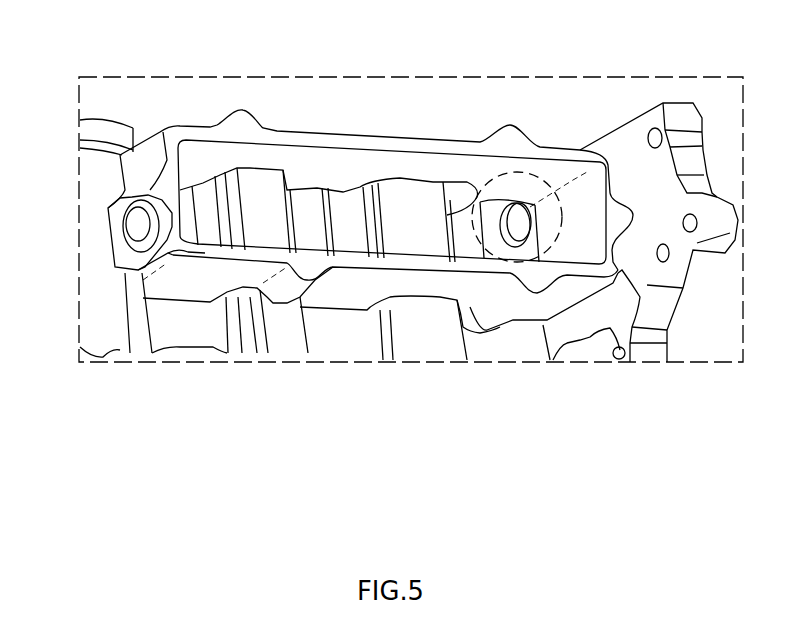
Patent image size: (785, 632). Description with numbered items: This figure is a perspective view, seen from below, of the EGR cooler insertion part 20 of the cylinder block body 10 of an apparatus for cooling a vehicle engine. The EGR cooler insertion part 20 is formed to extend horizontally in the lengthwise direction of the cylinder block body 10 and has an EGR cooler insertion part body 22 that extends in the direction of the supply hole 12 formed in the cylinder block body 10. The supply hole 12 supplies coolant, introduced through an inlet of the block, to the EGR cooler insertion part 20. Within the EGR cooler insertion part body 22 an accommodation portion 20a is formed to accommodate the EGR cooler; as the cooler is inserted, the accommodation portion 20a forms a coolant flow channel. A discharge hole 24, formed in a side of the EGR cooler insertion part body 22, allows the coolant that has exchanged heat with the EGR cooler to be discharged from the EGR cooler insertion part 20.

The cylinder block body 10 is at (110, 298).
The supply hole 12 is at (508, 225).
The EGR cooler insertion part 20 is at (200, 98).
The accommodation portion 20a is at (347, 213).
The EGR cooler insertion part body 22 is at (417, 280).
The discharge hole 24 is at (134, 229).